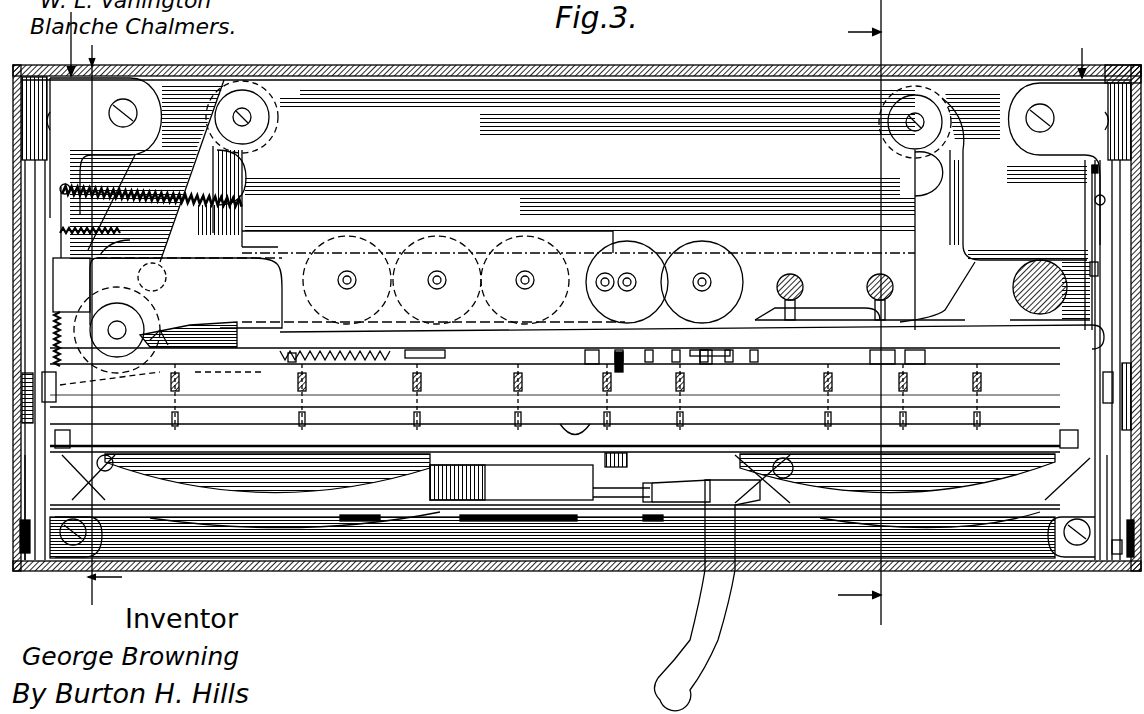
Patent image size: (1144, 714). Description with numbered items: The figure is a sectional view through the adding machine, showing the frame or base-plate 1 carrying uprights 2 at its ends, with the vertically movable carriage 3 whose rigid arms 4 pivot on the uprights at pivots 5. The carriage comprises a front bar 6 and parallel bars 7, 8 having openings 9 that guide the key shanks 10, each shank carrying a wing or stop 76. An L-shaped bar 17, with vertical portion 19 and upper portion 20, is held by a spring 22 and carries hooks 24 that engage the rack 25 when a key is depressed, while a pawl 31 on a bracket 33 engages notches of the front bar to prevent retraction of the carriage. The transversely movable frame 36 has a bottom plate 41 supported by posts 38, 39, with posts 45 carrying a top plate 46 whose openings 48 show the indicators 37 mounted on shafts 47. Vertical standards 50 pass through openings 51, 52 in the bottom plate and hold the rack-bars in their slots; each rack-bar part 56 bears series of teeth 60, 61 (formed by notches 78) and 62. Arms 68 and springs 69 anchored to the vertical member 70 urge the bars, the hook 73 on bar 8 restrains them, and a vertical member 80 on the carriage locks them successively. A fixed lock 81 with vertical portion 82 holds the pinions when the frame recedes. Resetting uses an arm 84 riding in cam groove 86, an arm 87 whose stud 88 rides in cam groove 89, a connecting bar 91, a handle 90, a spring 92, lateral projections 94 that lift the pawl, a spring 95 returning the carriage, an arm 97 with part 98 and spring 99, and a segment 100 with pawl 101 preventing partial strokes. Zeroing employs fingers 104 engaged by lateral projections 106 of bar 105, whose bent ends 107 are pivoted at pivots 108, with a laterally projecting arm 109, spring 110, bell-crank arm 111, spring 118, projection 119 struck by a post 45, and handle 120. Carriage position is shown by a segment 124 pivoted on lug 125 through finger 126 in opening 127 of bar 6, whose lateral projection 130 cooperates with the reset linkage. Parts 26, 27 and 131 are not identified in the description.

The frame or base-plate 1 is at (200, 92).
The uprights 2 is at (30, 76).
The vertically movable carriage 3 is at (128, 525).
The rigid arm 4 is at (40, 195).
The pivot 5 is at (50, 120).
The front bar 6 is at (585, 583).
The bar 7 is at (358, 402).
The bar 8 is at (158, 464).
The openings 9 is at (424, 382).
The key shanks 10 is at (822, 386).
The bar 17 is at (478, 418).
The vertical portion of bar 17 19 is at (232, 480).
The upper portion of bar 17 20 is at (132, 447).
The spring 22 is at (101, 387).
The hook 24 is at (62, 445).
The rack 25 is at (72, 500).
The screw 26 is at (58, 542).
The post 27 is at (42, 545).
The pawl 31 is at (30, 575).
The bracket 33 is at (1125, 560).
The transversely movable frame 36 is at (349, 315).
The indicators 37 is at (380, 240).
The post 38 is at (930, 100).
The post 39 is at (245, 92).
The bottom plate 41 is at (966, 216).
The posts 45 is at (1025, 272).
The top plate 46 is at (602, 232).
The shaft 47 is at (468, 240).
The openings 48 is at (437, 288).
The vertical standards 50 is at (465, 350).
The opening 51 is at (940, 310).
The opening 52 is at (226, 322).
The rack-bar part 56 is at (890, 362).
The series of teeth 60 is at (605, 365).
The series of teeth 61 is at (702, 365).
The teeth 62 is at (333, 364).
The arm 68 is at (248, 160).
The spring 69 is at (112, 242).
The vertical member 70 is at (66, 184).
The hook 73 is at (1052, 318).
The wing or stop 76 is at (910, 366).
The lateral notches 78 is at (652, 348).
The vertical member 80 is at (622, 366).
The fixed lock 81 is at (452, 178).
The vertical portion 82 is at (878, 282).
The arm 84 is at (150, 213).
The cam groove 86 is at (430, 520).
The arm 87 is at (915, 168).
The stud 88 is at (795, 466).
The cam groove 89 is at (960, 482).
The handle 90 is at (712, 620).
The bar 91 is at (665, 485).
The spring 92 is at (98, 193).
The lateral projection 94 is at (1103, 410).
The spring 95 is at (546, 524).
The arm 97 is at (248, 360).
The vertically projecting part 98 is at (292, 364).
The spring 99 is at (165, 348).
The segment 100 is at (368, 545).
The pawl 101 is at (423, 343).
The finger 104 is at (793, 302).
The bar 105 is at (1040, 335).
The lateral projection 106 is at (866, 318).
The downward bent ends 107 is at (50, 280).
The pivots 108 is at (1094, 240).
The laterally projecting arm 109 is at (1090, 192).
The spring 110 is at (65, 322).
The bell-crank arm 111 is at (1090, 184).
The spring 118 is at (1095, 168).
The lateral projection 119 is at (1057, 265).
The handle 120 is at (1098, 228).
The segment 124 is at (505, 468).
The lug 125 is at (617, 456).
The finger 126 is at (622, 483).
The opening 127 is at (657, 524).
The lateral projection 130 is at (693, 503).
The plate 131 is at (975, 565).